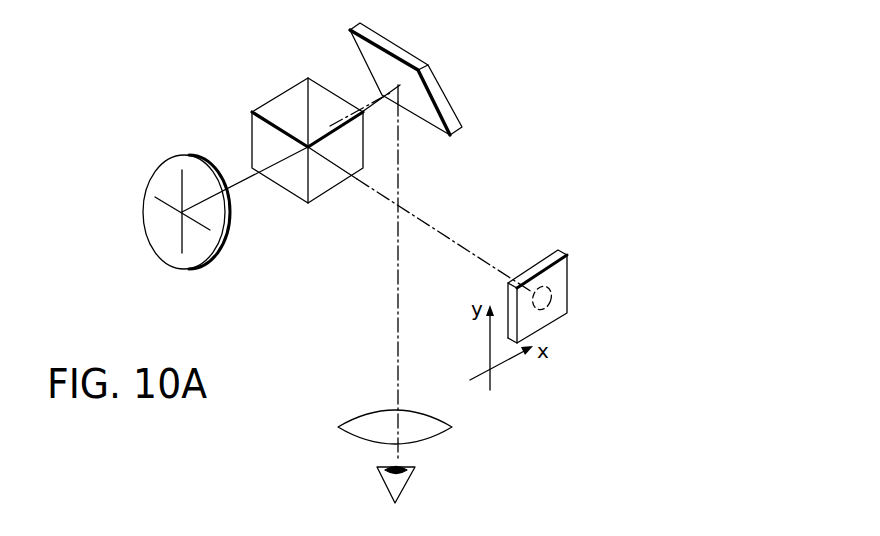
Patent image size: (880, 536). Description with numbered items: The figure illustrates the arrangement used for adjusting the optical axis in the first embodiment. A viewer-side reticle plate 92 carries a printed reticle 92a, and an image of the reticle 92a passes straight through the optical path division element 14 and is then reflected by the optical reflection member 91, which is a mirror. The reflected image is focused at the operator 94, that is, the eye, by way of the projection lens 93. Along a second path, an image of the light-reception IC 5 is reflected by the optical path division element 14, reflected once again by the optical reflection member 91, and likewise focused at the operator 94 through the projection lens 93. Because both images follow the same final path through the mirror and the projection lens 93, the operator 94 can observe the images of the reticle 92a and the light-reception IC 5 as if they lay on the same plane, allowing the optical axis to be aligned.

The light-reception IC 5 is at (553, 272).
The optical path division element 14 is at (330, 180).
The optical reflection member 91 is at (428, 105).
The viewer-side reticle plate 92 is at (155, 255).
The reticle 92a is at (183, 240).
The projection lens 93 is at (420, 423).
The operator 94 is at (413, 482).